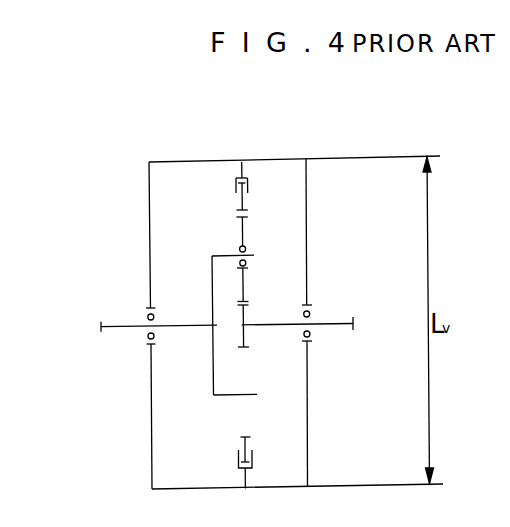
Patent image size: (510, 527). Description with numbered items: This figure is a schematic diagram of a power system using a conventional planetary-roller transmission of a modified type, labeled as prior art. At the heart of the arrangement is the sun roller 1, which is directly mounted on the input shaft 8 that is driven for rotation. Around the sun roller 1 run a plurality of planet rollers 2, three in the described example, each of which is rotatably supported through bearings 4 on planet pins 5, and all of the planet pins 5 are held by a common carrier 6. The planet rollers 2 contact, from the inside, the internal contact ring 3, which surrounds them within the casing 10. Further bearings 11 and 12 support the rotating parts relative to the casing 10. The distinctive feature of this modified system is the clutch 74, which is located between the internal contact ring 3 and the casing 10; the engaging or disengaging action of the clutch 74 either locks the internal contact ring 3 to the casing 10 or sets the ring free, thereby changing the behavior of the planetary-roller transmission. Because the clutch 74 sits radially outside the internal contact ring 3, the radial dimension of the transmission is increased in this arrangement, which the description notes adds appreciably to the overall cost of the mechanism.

The sun roller 1 is at (248, 341).
The planet rollers 2 is at (243, 228).
The internal contact ring 3 is at (246, 197).
The bearings 4 is at (220, 255).
The planet pins 5 is at (238, 247).
The carrier 6 is at (177, 249).
The input shaft 8 is at (330, 330).
The casing 10 is at (152, 478).
The bearing 11 is at (311, 313).
The bearing 12 is at (147, 336).
The clutch 74 is at (236, 188).